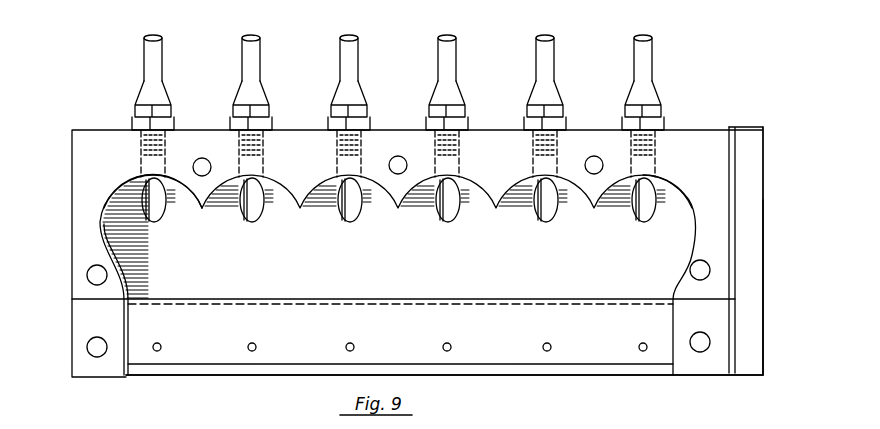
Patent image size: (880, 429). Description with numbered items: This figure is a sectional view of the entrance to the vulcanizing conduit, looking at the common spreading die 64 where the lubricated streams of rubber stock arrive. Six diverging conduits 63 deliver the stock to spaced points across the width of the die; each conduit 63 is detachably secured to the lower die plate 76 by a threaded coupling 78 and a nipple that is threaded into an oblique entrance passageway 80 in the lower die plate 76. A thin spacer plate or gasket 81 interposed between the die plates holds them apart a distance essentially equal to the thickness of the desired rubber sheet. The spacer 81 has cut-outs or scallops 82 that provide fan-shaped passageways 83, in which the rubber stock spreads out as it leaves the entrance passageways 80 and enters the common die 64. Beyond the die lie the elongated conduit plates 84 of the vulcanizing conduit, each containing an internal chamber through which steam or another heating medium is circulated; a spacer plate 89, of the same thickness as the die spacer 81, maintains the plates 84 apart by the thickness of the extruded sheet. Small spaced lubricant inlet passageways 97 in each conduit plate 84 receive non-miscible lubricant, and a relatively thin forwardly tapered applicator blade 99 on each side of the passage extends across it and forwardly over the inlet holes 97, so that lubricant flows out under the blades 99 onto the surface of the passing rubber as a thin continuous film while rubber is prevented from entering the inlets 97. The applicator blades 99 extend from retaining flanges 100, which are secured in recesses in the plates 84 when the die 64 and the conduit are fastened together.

The diverging conduits 63 is at (246, 58).
The common spreading die 64 is at (97, 119).
The lower die plate 76 is at (748, 133).
The threaded couplings 78 is at (535, 90).
The oblique entrance passageways 80 is at (354, 215).
The spacer plate or gasket 81 is at (692, 136).
The cut-outs or scallops 82 is at (330, 185).
The fan-shaped passageways 83 is at (289, 217).
The conduit plates 84 is at (764, 336).
The spacer plate 89 is at (710, 364).
The lubricant inlet passageways 97 is at (252, 352).
The applicator blade 99 is at (329, 346).
The retaining flanges 100 is at (300, 301).